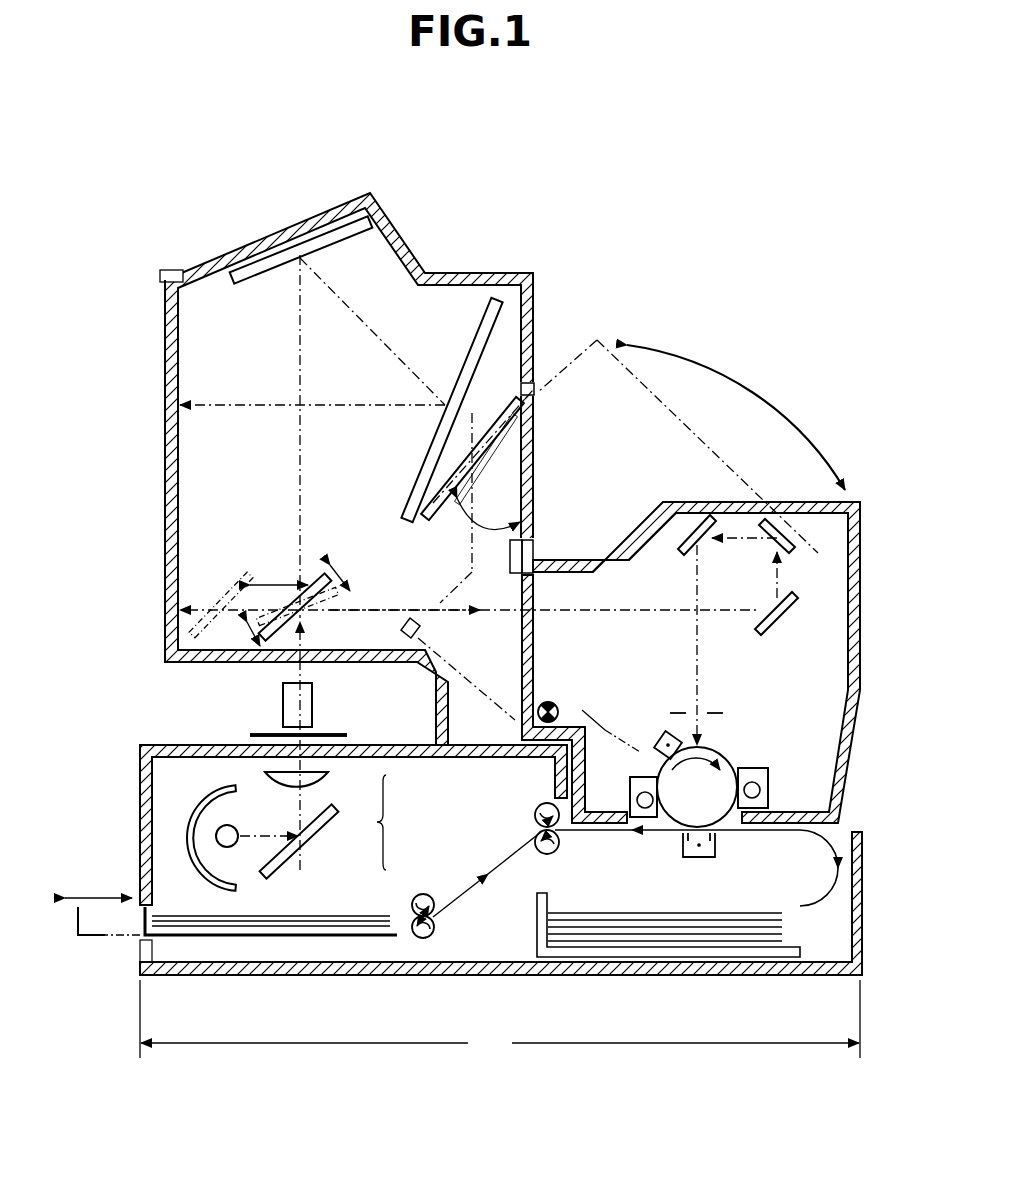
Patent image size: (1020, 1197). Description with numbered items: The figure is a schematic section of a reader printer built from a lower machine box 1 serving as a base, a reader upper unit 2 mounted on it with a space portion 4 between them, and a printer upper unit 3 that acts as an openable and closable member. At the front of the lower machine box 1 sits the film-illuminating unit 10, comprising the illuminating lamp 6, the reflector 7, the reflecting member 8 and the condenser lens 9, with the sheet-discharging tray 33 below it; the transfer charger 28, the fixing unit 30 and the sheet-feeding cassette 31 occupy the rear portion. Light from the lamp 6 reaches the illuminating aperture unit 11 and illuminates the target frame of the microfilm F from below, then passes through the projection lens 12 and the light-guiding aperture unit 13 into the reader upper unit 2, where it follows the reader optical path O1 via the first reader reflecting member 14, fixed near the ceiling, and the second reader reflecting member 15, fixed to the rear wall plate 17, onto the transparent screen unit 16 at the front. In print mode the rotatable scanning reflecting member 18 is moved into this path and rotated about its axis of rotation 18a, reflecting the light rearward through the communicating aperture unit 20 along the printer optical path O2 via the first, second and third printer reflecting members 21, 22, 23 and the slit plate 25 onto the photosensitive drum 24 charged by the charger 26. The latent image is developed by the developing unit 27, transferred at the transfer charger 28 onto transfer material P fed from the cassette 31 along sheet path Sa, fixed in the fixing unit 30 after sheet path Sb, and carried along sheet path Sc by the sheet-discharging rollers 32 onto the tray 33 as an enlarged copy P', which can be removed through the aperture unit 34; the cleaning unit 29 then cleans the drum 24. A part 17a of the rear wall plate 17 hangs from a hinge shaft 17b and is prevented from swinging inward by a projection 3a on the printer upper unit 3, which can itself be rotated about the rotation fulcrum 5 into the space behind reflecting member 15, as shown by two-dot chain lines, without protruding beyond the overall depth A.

The lower machine box 1 is at (140, 811).
The upper unit of reader unit 2 is at (470, 273).
The upper unit of printer unit 3 is at (712, 368).
The projection 3a is at (412, 616).
The space portion 4 is at (157, 688).
The rotation fulcrum 5 is at (553, 701).
The illuminating lamp 6 is at (237, 828).
The reflector 7 is at (218, 795).
The reflecting member 8 is at (318, 842).
The condenser lens 9 is at (326, 780).
The film-illuminating unit 10 is at (396, 833).
The illuminating aperture unit 11 is at (336, 734).
The projection lens 12 is at (312, 706).
The light-guiding aperture unit 13 is at (280, 655).
The first reader reflecting member 14 is at (256, 273).
The second reader reflecting member 15 is at (490, 308).
The transparent screen unit 16 is at (165, 342).
The rear wall plate 17 is at (534, 300).
The rotatable rear wall plate 17a is at (495, 428).
The hinge shaft 17b is at (536, 390).
The rotatable scanning reflecting member 18 is at (218, 590).
The axis of rotation 18a is at (292, 595).
The communicating aperture unit 20 is at (534, 594).
The first printer reflecting member 21 is at (784, 621).
The second printer reflecting member 22 is at (782, 521).
The third printer reflecting member 23 is at (688, 536).
The photosensitive drum 24 is at (730, 760).
The slit plate 25 is at (713, 712).
The charger 26 is at (660, 735).
The developing unit 27 is at (769, 784).
The transfer charger 28 is at (722, 856).
The cleaning unit 29 is at (632, 795).
The fixing unit 30 is at (560, 848).
The sheet-feeding cassette 31 is at (668, 943).
The sheet-discharging rollers 32 is at (426, 893).
The sheet-discharging tray 33 is at (232, 943).
The aperture unit 34 is at (140, 894).
The overall depth A is at (500, 1019).
The microfilm F is at (250, 734).
The transfer material P is at (665, 906).
The enlarged copy P' is at (271, 899).
The sheet path Sa is at (803, 868).
The sheet path Sb is at (677, 851).
The sheet path Sc is at (487, 862).
The reader optical path O1 is at (303, 478).
The printer optical path O2 is at (596, 614).